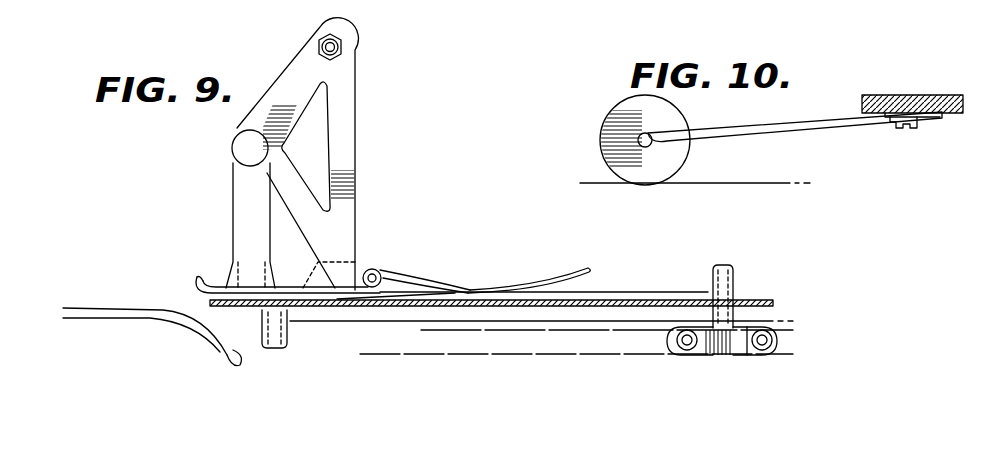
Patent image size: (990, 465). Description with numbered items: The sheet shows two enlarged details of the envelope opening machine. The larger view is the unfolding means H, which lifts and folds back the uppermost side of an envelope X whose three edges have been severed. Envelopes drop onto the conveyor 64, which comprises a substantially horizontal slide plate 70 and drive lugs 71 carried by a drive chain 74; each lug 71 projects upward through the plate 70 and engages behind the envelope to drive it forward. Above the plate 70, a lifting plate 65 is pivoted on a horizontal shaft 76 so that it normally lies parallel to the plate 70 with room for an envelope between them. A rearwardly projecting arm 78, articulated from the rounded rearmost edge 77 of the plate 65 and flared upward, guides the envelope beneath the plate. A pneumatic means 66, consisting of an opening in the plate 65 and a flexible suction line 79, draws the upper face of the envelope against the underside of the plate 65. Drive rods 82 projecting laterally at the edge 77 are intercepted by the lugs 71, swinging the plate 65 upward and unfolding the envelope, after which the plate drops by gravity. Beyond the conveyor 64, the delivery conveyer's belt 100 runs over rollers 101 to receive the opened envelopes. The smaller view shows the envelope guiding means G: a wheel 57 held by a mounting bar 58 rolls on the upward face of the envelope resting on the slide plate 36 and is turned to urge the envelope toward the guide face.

In FIG. 9, the unfolding means H is at (362, 88).
In FIG. 9, the shaft 76 is at (340, 44).
In FIG. 9, the means to secure one face of the envelopes to the plate 66 is at (238, 158).
In FIG. 9, the suction line 79 is at (233, 214).
In FIG. 9, the lifting plate 65 is at (252, 294).
In FIG. 9, the drive rods 82 is at (377, 270).
In FIG. 9, the rearmost edge 77 is at (408, 276).
In FIG. 9, the arm 78 is at (504, 285).
In FIG. 9, the slide plate 70 is at (585, 305).
In FIG. 9, the envelope X is at (668, 289).
In FIG. 9, the drive lugs 71 is at (728, 273).
In FIG. 9, the drive chain 74 is at (668, 350).
In FIG. 9, the conveyor 64 is at (716, 355).
In FIG. 9, the belt 100 is at (113, 308).
In FIG. 9, the rollers 101 is at (109, 331).
In FIG. 10, the wheel 57 is at (678, 154).
In FIG. 10, the mounting bar 58 is at (797, 118).
In FIG. 10, the envelope guiding means G is at (833, 108).
In FIG. 10, the slide plate 36 is at (772, 181).